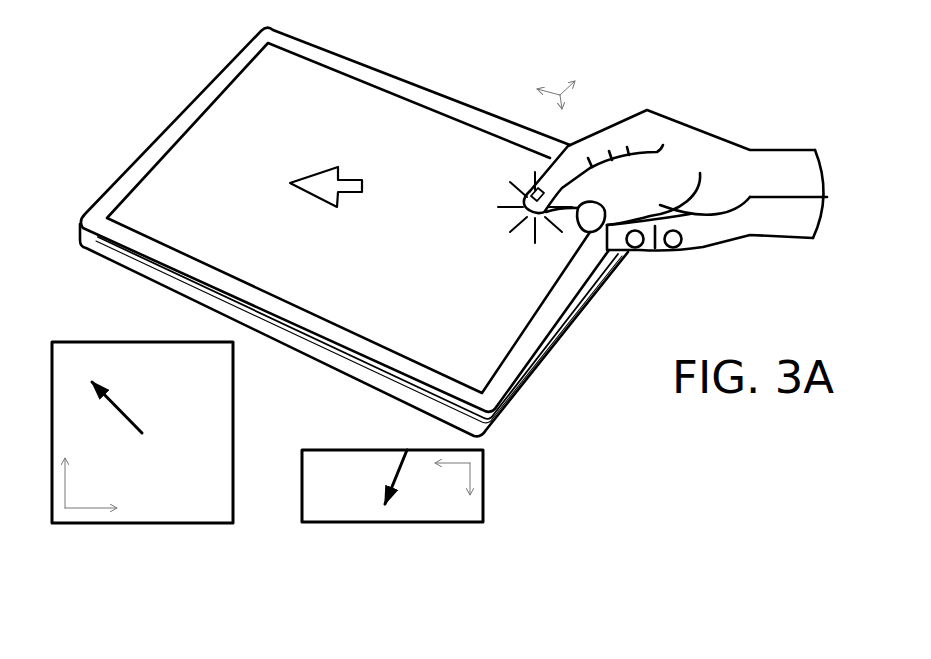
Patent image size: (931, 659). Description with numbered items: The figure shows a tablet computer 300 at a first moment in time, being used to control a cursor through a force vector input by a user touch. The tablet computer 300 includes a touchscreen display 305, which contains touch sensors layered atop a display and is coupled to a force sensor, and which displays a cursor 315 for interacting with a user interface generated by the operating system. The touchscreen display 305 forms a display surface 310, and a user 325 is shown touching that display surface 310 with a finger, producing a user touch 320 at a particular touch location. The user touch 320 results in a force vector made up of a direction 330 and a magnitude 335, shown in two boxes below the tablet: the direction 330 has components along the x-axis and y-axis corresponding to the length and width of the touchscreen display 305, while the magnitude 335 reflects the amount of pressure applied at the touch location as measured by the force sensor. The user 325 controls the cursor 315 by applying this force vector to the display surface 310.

The tablet computer 300 is at (330, 232).
The touchscreen display 305 is at (137, 236).
The display surface 310 is at (488, 358).
The cursor 315 is at (318, 160).
The user touch 320 is at (518, 175).
The user 325 is at (698, 113).
The direction 330 is at (217, 373).
The magnitude 335 is at (352, 480).